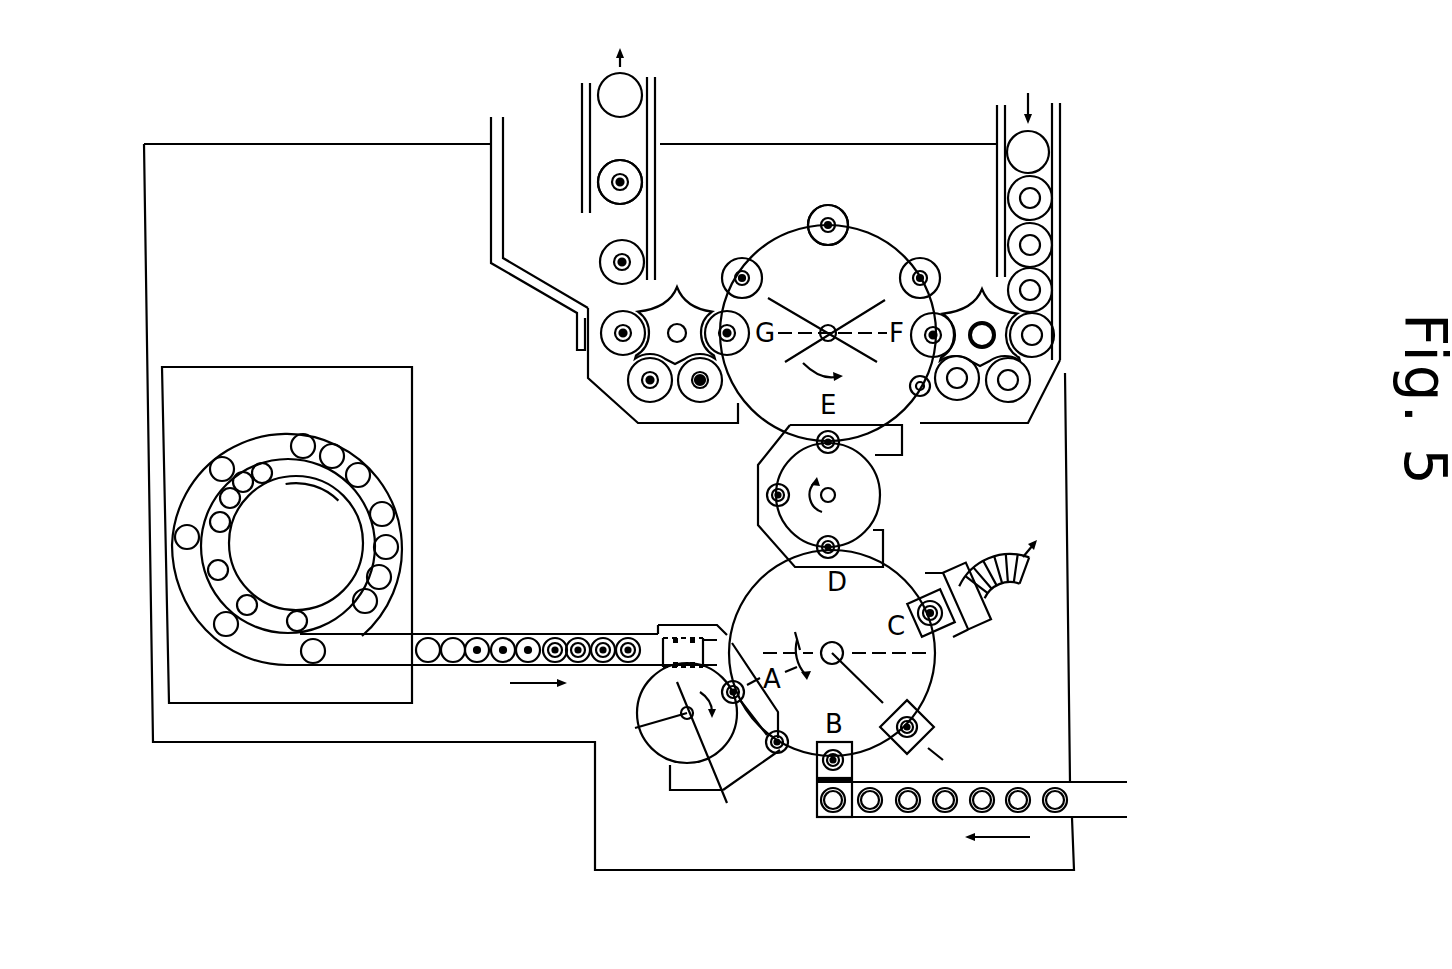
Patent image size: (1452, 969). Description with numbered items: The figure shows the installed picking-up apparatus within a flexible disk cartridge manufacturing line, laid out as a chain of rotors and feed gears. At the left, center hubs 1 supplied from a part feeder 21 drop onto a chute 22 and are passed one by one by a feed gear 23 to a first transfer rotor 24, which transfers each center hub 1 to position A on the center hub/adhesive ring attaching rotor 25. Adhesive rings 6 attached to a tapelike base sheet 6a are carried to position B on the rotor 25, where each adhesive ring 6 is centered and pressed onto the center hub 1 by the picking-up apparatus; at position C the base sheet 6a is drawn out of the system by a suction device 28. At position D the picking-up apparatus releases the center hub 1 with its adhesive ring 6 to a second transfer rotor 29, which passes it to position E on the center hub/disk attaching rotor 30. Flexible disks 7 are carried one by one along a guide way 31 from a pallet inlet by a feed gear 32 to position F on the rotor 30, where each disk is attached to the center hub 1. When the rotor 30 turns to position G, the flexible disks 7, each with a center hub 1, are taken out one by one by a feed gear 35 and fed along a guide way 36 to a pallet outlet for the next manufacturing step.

The center hub 1 is at (615, 182).
The adhesive ring 6 is at (833, 817).
The tapelike base sheet 6a is at (853, 767).
The flexible disk 7 is at (615, 203).
The bowl feeder 21 is at (300, 365).
The chute 22 is at (479, 669).
The feed gear 23 is at (688, 637).
The first transfer rotor 24 is at (668, 740).
The center hub/adhesive ring attaching rotor 25 is at (920, 674).
The suction device 28 is at (983, 618).
The second transfer rotor 29 is at (867, 482).
The center hub/disk attaching rotor 30 is at (873, 255).
The guide way 31 is at (1060, 142).
The feed gear 32 is at (977, 310).
The feed gear 35 is at (680, 300).
The guide way 36 is at (656, 170).